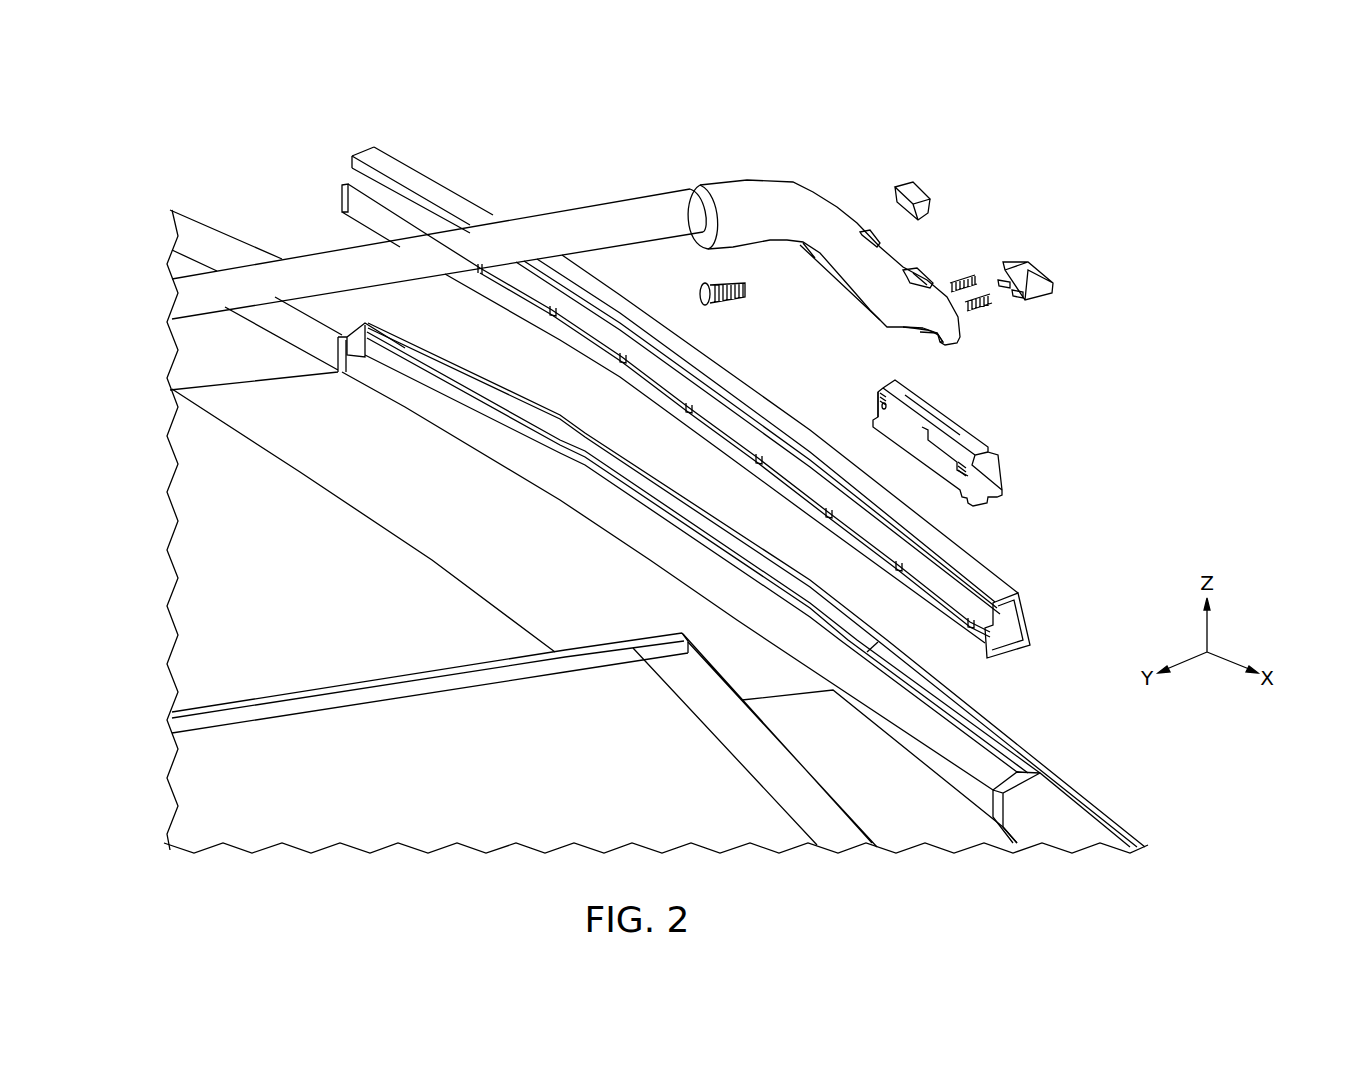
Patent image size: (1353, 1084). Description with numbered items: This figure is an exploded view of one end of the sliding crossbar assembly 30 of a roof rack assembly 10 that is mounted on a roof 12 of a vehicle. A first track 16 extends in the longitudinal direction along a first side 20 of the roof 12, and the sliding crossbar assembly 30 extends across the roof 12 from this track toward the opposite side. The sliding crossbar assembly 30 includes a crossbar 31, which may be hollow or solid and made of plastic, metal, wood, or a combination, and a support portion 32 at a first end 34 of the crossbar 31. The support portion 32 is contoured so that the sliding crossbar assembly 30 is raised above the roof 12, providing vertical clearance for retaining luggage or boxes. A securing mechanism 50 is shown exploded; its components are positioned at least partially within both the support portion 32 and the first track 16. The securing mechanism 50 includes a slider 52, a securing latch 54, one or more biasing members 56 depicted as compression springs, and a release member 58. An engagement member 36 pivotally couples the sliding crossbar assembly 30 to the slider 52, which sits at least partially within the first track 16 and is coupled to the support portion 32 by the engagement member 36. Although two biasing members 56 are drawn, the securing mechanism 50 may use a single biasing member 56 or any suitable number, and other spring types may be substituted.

The roof rack assembly 10 is at (950, 160).
The roof 12 is at (199, 212).
The first track 16 is at (560, 338).
The first side 20 is at (1062, 203).
The sliding crossbar assembly 30 is at (577, 188).
The crossbar 31 is at (412, 268).
The support portion 32 is at (762, 188).
The first end 34 is at (800, 174).
The engagement member 36 is at (727, 302).
The securing mechanism 50 is at (869, 324).
The slider 52 is at (995, 470).
The securing latch 54 is at (1045, 280).
The biasing member 56 is at (963, 280).
The release member 58 is at (905, 185).